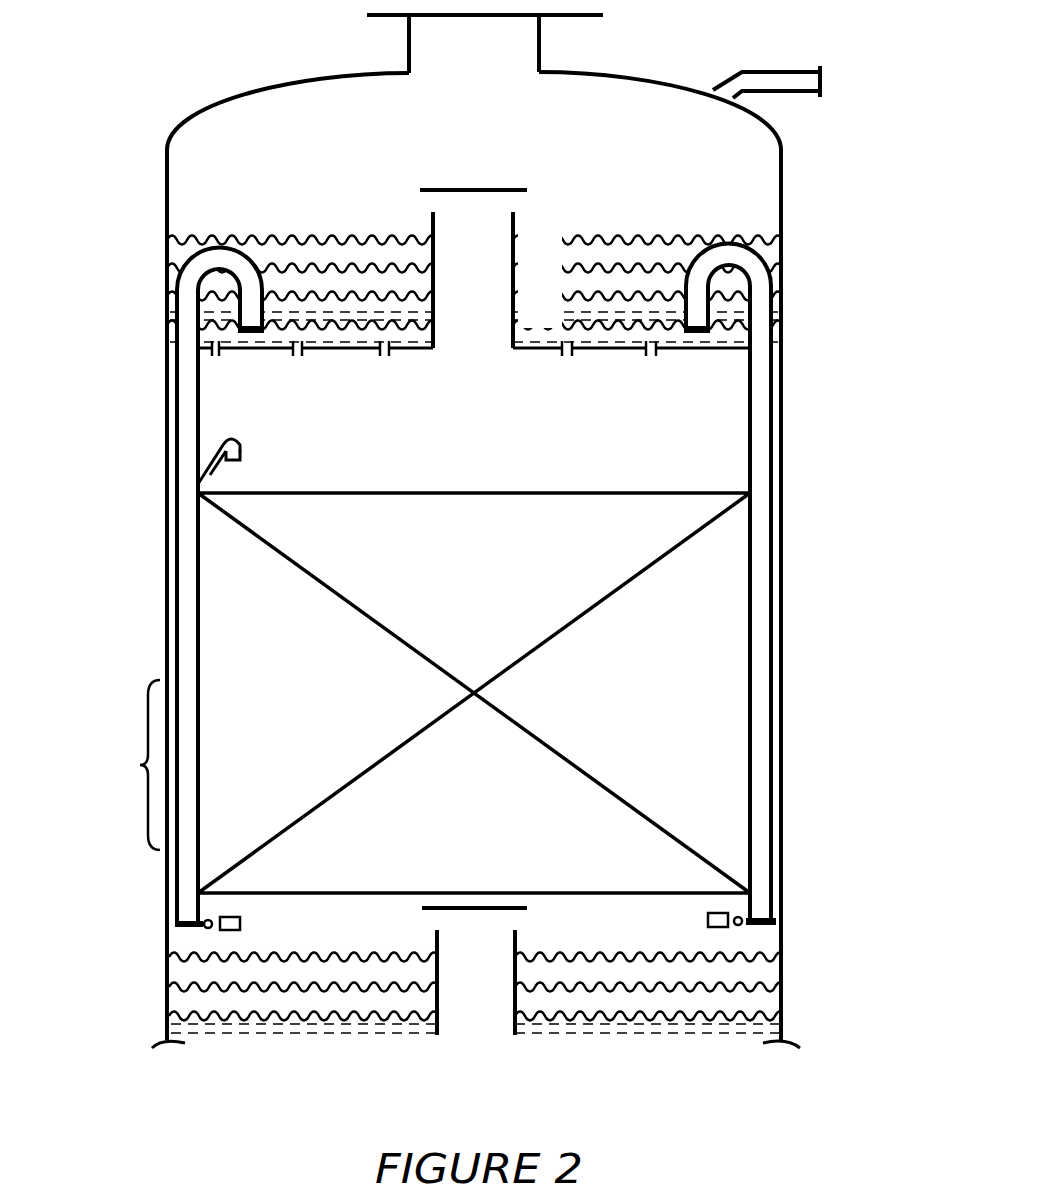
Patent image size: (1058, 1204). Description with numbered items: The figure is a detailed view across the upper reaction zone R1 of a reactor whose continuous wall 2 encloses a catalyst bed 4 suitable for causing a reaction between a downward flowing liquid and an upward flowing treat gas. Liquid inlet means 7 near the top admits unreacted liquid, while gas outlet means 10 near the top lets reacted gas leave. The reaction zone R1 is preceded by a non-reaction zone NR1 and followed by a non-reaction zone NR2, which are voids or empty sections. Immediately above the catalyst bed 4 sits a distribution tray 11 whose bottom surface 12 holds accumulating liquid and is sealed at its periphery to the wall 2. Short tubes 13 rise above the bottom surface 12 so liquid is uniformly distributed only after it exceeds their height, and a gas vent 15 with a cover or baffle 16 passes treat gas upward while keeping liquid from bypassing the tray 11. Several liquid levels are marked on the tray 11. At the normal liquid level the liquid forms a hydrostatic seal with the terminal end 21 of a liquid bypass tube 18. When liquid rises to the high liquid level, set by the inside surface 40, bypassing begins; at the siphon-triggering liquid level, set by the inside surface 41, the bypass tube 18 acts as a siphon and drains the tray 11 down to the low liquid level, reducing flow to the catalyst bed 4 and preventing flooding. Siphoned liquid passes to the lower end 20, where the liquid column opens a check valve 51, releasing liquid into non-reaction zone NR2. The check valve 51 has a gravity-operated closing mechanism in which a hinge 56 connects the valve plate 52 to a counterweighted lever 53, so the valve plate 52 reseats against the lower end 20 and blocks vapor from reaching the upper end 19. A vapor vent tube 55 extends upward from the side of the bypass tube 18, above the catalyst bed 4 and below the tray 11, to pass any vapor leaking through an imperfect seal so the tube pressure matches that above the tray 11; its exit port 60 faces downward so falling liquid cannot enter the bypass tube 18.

The continuous wall 2 is at (781, 176).
The catalyst bed 4 is at (217, 557).
The liquid inlet means 7 is at (544, 57).
The gas outlet means 10 is at (775, 72).
The distribution tray 11 is at (167, 355).
The bottom surface 12 is at (547, 350).
The short tubes 13 is at (382, 352).
The gas vent 15 is at (433, 225).
The cover or baffle 16 is at (465, 190).
The liquid bypass tube 18 is at (193, 591).
The upper end 19 is at (176, 290).
The lower end 20 is at (183, 916).
The terminal end 21 is at (249, 334).
The inside surface 40 is at (207, 257).
The inside surface 41 is at (222, 272).
The check valve 51 is at (190, 930).
The valve plate 52 is at (190, 929).
The counterweighted lever 53 is at (240, 919).
The vapor vent tube 55 is at (245, 452).
The hinge 56 is at (209, 930).
The exit port 60 is at (233, 460).
The non-reaction zone NR1 is at (722, 468).
The non-reaction zone NR2 is at (750, 940).
The reaction zone R1 is at (131, 765).